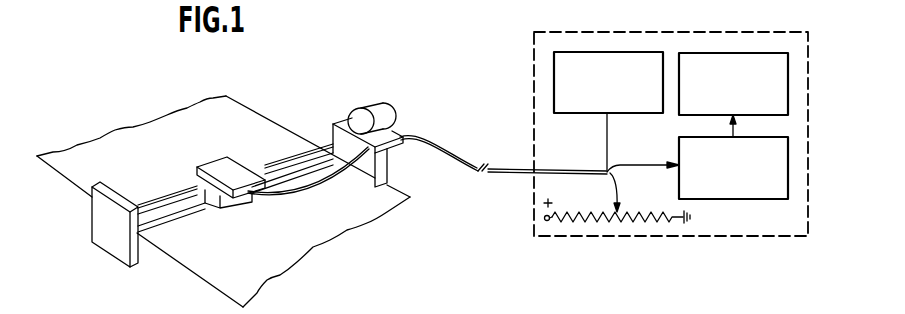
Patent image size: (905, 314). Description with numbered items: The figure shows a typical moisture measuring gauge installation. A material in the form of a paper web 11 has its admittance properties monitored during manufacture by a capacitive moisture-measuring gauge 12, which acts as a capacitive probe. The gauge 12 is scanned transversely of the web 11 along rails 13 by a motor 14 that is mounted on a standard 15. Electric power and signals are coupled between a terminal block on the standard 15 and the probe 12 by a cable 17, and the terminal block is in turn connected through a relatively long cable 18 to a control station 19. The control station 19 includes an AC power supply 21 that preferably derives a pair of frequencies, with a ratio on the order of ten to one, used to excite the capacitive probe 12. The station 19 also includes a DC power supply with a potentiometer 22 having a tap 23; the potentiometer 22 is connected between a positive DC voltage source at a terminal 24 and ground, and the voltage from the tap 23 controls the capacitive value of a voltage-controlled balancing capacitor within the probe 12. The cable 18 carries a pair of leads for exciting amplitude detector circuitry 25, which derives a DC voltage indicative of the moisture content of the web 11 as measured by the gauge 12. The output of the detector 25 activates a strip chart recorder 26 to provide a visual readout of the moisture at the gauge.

The paper web 11 is at (77, 175).
The capacitive moisture-measuring gauge 12 is at (238, 203).
The rails 13 is at (172, 190).
The motor 14 is at (355, 112).
The standard 15 is at (370, 167).
The cable 17 is at (320, 181).
The cable 18 is at (472, 160).
The control station 19 is at (717, 236).
The AC power supply 21 is at (582, 114).
The potentiometer 22 is at (628, 220).
The tap 23 is at (618, 200).
The terminal 24 is at (544, 219).
The amplitude detector circuitry 25 is at (746, 200).
The strip chart recorder 26 is at (777, 115).